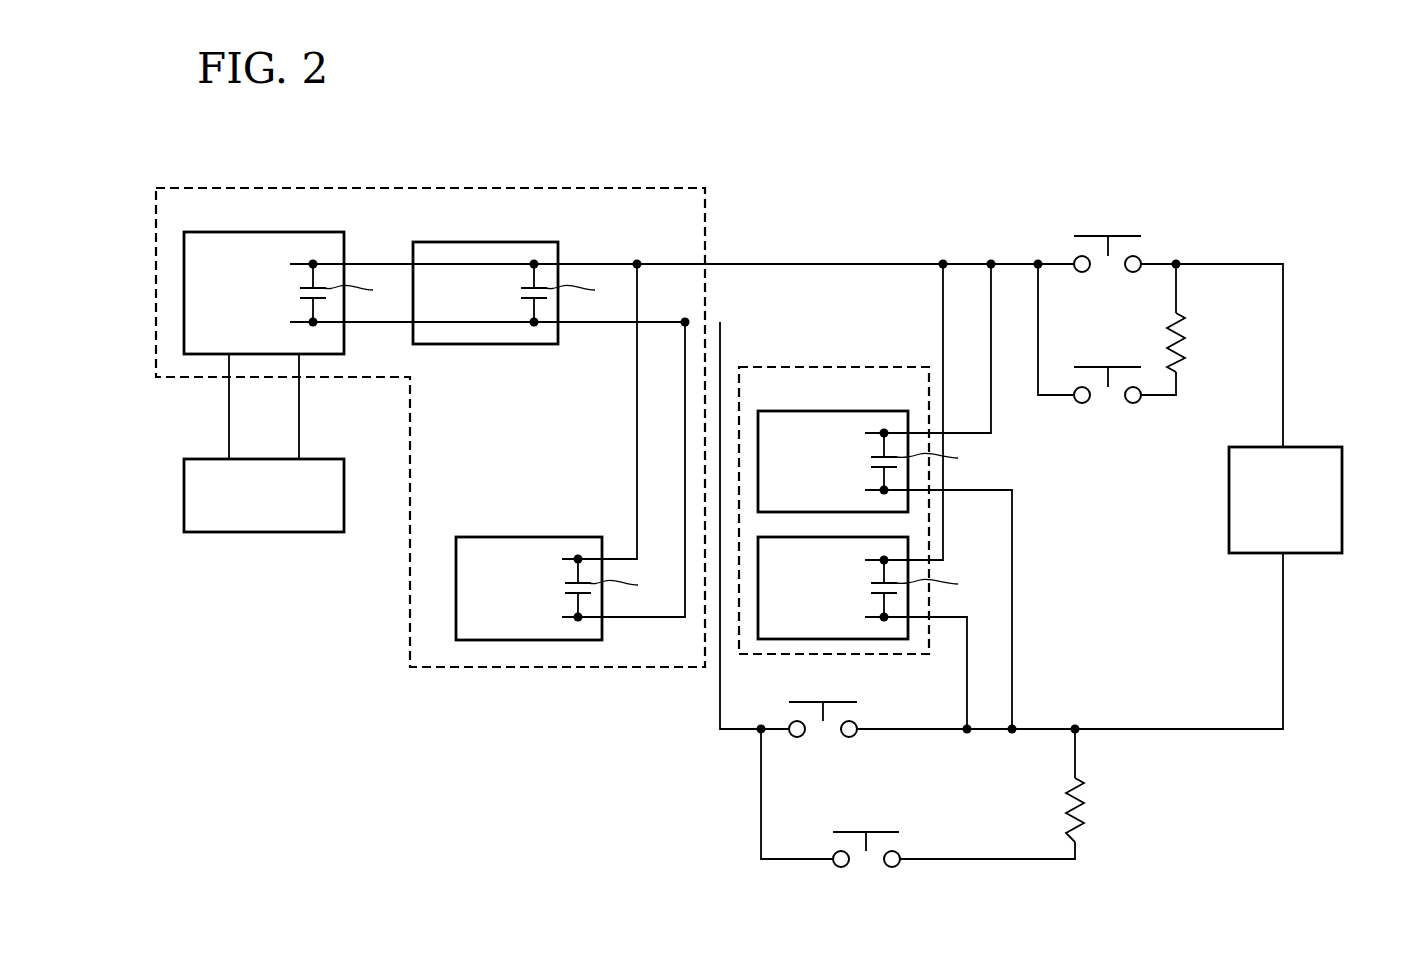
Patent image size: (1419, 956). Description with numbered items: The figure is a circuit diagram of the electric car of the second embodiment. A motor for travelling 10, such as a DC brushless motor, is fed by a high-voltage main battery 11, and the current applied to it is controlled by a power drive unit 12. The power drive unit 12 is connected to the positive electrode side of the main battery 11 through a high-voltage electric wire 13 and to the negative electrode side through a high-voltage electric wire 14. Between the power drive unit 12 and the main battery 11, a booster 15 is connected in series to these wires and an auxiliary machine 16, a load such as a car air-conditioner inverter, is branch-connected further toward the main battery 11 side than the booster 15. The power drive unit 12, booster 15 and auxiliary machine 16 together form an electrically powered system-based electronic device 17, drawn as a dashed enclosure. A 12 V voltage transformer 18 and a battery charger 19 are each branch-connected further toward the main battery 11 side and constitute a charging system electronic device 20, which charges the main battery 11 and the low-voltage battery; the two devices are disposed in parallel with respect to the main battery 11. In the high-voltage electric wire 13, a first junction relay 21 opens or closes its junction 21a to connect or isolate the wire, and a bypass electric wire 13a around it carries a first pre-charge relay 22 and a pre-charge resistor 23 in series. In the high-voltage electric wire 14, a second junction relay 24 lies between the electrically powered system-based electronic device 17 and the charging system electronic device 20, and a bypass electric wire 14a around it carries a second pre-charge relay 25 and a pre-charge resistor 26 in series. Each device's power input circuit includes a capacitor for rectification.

The motor for travelling 10 is at (266, 533).
The main battery 11 is at (1308, 447).
The power drive unit 12 is at (305, 232).
The high-voltage electric wire 13 is at (819, 260).
The bypass electric wire 13a is at (1038, 333).
The high-voltage electric wire 14 is at (1292, 629).
The bypass electric wire 14a is at (760, 793).
The booster 15 is at (490, 242).
The auxiliary machine 16 is at (528, 537).
The electrically powered system-based electronic device 17 is at (530, 668).
The 12 V voltage transformer 18 is at (830, 411).
The battery charger 19 is at (860, 537).
The charging system electronic device 20 is at (863, 367).
The first junction relay 21 is at (1149, 329).
The junction 21a is at (1123, 236).
The first pre-charge relay 22 is at (1066, 381).
The pre-charge resistor 23 is at (1183, 337).
The second junction relay 24 is at (782, 712).
The second pre-charge relay 25 is at (824, 846).
The pre-charge resistor 26 is at (1082, 805).